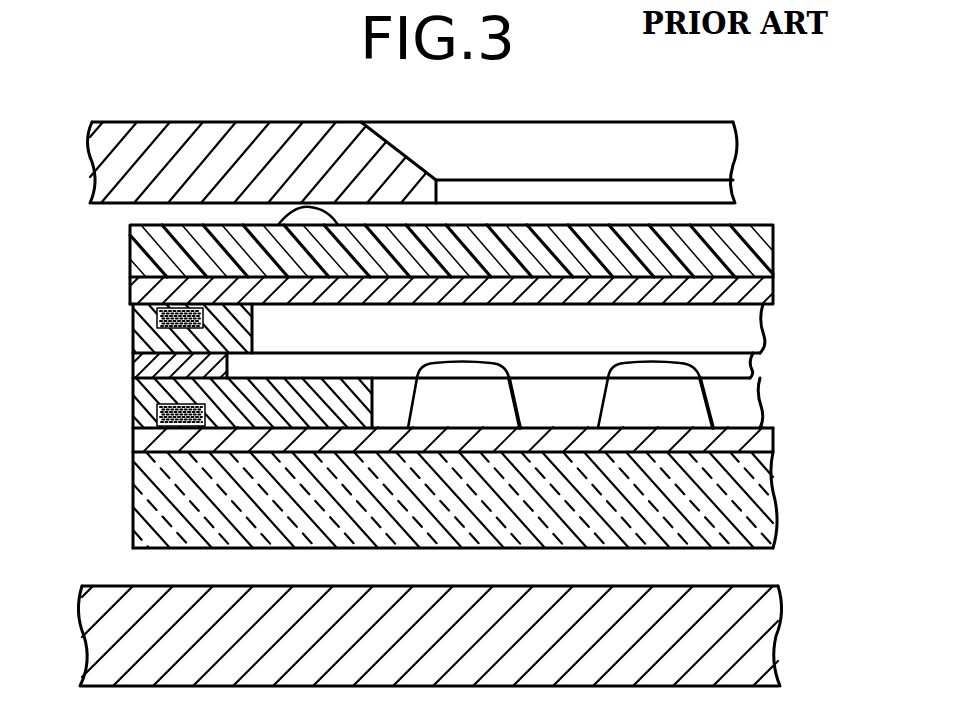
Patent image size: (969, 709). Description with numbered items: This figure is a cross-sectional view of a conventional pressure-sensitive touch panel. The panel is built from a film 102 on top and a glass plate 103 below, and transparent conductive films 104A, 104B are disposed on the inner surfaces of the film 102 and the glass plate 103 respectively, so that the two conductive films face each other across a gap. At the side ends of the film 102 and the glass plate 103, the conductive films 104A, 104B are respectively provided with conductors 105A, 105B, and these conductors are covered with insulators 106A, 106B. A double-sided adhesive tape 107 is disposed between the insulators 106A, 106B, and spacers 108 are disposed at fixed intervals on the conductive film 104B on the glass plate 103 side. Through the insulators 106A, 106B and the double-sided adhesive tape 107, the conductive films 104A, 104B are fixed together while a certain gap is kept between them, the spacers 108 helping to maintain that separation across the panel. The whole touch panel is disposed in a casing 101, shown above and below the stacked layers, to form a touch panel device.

The casing 101 is at (100, 152).
The film 102 is at (130, 245).
The glass plate 103 is at (768, 515).
The transparent conductive film 104A is at (130, 289).
The transparent conductive film 104B is at (773, 433).
The conductor 105A is at (133, 323).
The conductor 105B is at (133, 457).
The insulator 106A is at (133, 340).
The insulator 106B is at (133, 407).
The double-sided adhesive tape 107 is at (133, 372).
The spacers 108 is at (466, 376).